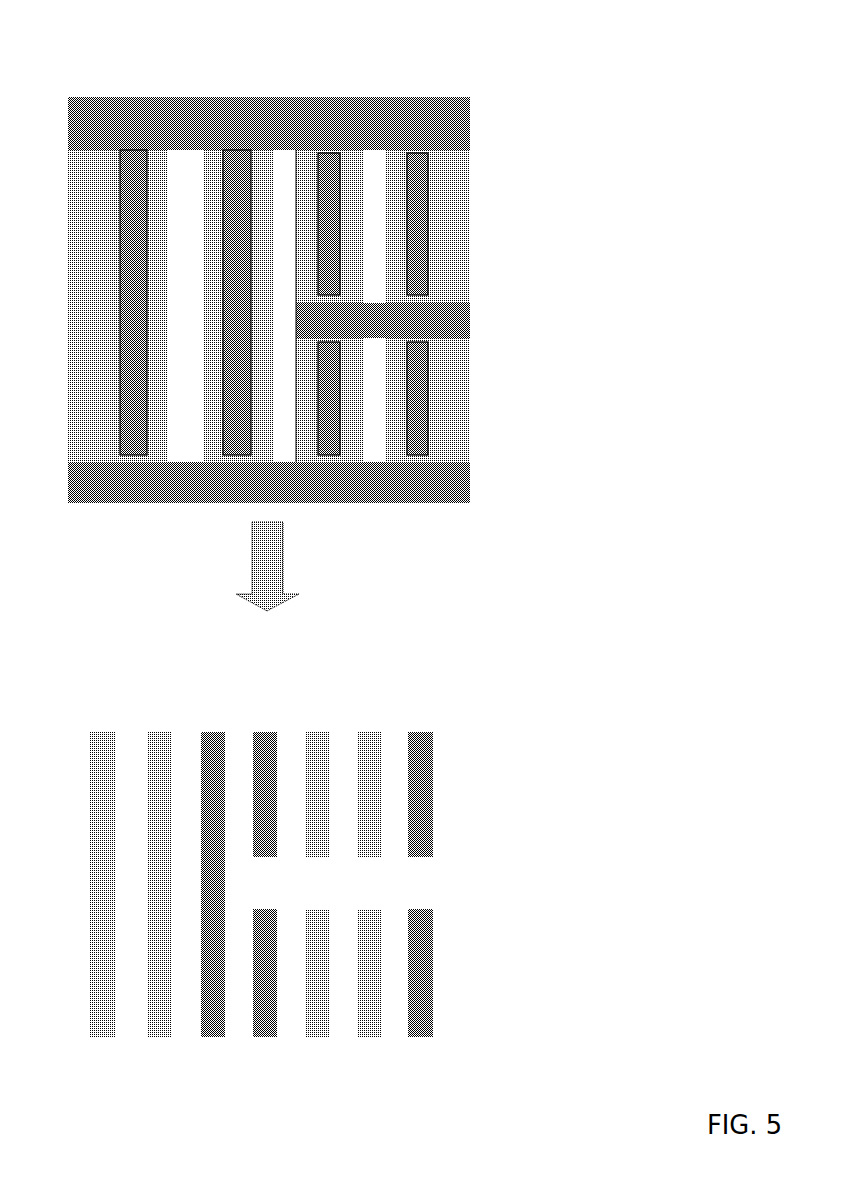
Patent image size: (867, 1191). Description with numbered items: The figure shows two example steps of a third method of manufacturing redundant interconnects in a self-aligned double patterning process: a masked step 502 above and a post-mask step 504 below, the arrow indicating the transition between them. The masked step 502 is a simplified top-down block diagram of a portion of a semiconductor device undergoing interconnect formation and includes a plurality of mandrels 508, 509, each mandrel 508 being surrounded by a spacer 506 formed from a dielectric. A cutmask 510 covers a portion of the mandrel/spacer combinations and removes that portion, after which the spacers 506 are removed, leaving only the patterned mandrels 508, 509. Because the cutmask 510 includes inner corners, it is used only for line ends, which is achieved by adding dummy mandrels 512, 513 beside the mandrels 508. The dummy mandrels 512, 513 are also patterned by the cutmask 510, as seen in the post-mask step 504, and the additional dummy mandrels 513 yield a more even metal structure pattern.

The masked step 502 is at (593, 32).
The post-mask step 504 is at (688, 777).
The spacer 506 is at (188, 140).
The mandrel 508 is at (117, 328).
The mandrel 509 is at (176, 377).
The cutmask 510 is at (478, 427).
The dummy mandrel 512 is at (224, 330).
The dummy mandrel 513 is at (290, 370).